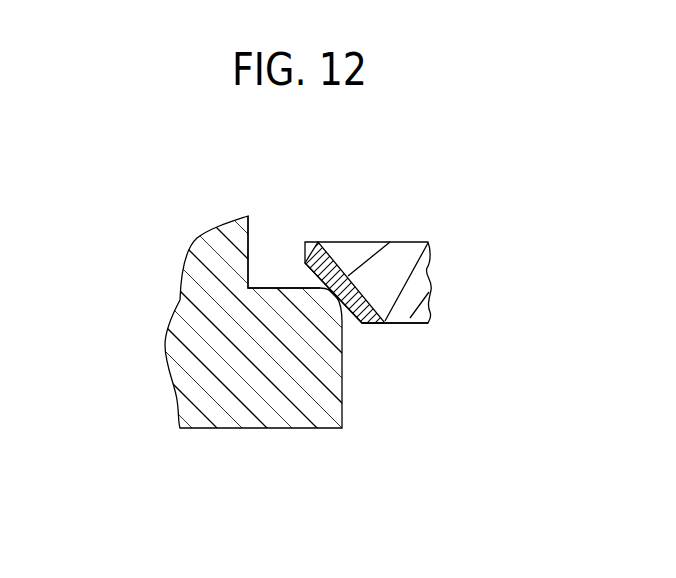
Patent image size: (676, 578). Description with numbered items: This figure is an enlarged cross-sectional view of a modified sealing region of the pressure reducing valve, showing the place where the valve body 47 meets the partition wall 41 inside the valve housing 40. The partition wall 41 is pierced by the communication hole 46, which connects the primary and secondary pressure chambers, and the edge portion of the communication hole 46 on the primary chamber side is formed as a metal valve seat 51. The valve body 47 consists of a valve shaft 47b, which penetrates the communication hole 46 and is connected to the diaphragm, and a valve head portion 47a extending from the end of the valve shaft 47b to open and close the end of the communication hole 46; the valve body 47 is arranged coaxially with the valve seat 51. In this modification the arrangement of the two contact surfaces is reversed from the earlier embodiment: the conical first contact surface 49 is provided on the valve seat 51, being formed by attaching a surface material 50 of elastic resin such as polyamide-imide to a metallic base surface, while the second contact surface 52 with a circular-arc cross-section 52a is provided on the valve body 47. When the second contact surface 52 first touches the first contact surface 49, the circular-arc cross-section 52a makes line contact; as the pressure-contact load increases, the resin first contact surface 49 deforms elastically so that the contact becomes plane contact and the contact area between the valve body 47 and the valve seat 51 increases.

The valve housing 40 is at (375, 253).
The partition wall 41 is at (376, 249).
The communication hole 46 is at (305, 258).
The valve body 47 is at (215, 428).
The valve head portion 47a is at (275, 400).
The valve shaft 47b is at (240, 235).
The first contact surface 49 is at (353, 325).
The surface material 50 is at (353, 325).
The valve seat 51 is at (407, 312).
The second contact surface 52 is at (335, 378).
The circular-arc cross-section 52a is at (335, 378).